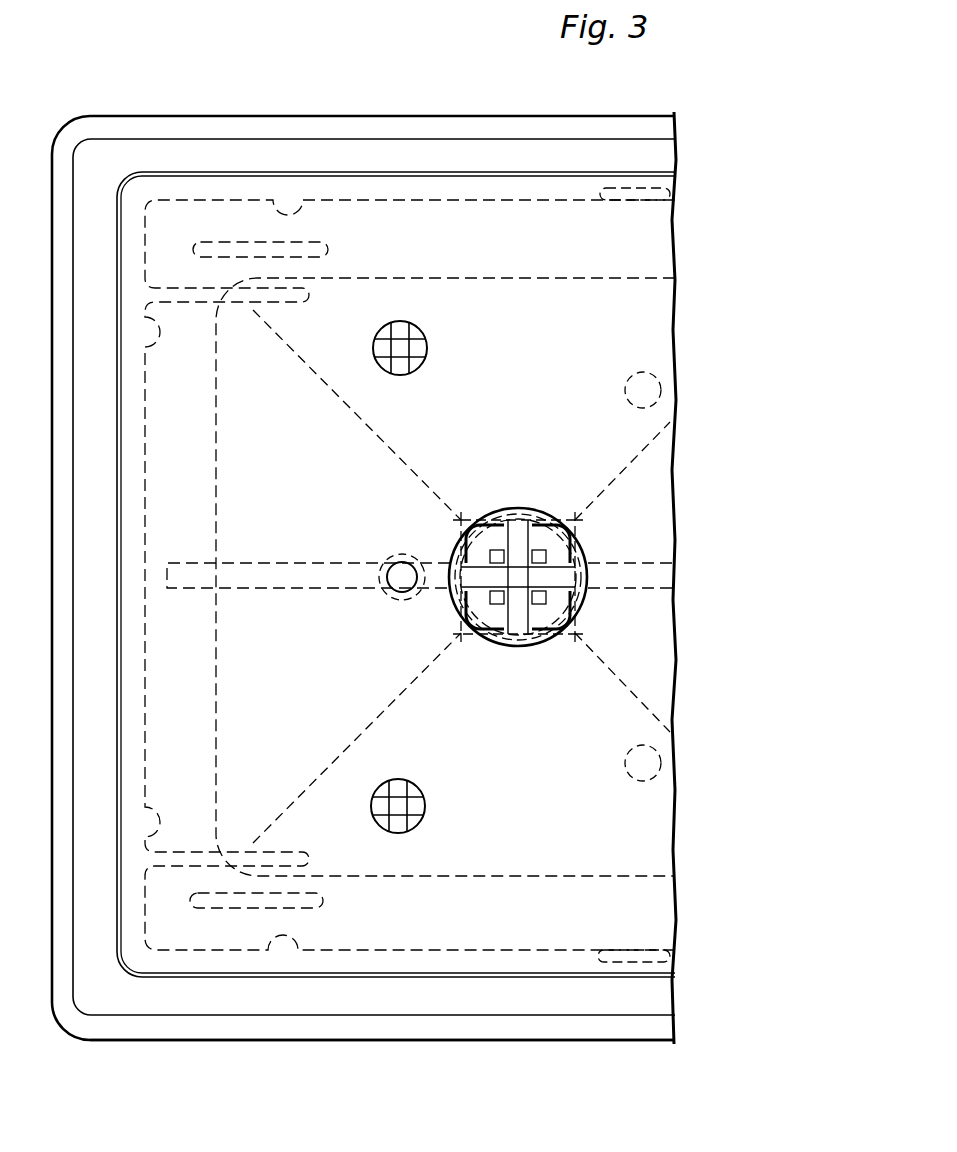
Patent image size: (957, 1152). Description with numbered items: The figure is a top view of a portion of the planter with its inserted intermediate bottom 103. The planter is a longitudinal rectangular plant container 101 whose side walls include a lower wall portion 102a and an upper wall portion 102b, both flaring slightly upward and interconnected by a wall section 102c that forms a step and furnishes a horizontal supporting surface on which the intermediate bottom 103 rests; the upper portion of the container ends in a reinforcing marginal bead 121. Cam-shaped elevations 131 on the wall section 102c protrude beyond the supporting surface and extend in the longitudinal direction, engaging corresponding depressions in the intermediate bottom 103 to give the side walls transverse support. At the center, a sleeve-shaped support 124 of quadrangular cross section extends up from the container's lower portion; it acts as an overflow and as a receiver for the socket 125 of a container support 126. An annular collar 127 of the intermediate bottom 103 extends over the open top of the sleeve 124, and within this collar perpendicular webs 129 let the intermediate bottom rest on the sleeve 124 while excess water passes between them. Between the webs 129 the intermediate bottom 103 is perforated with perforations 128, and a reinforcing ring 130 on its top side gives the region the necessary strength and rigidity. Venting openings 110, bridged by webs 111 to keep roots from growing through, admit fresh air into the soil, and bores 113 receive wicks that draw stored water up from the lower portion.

The plant container 101 is at (414, 107).
The lower wall portion 102a is at (468, 186).
The upper wall portion 102b is at (667, 157).
The wall section 102c is at (668, 176).
The intermediate bottom 103 is at (658, 314).
The venting openings 110 is at (418, 323).
The webs 111 is at (422, 348).
The bores 113 is at (392, 592).
The marginal bead 121 is at (396, 1029).
The sleeve-shaped support 124 is at (556, 554).
The socket 125 is at (577, 603).
The container support 126 is at (600, 876).
The annular collar 127 is at (452, 600).
The perforations 128 is at (498, 557).
The webs 129 is at (518, 535).
The reinforcing ring 130 is at (482, 632).
The cam-shaped elevations 131 is at (624, 196).